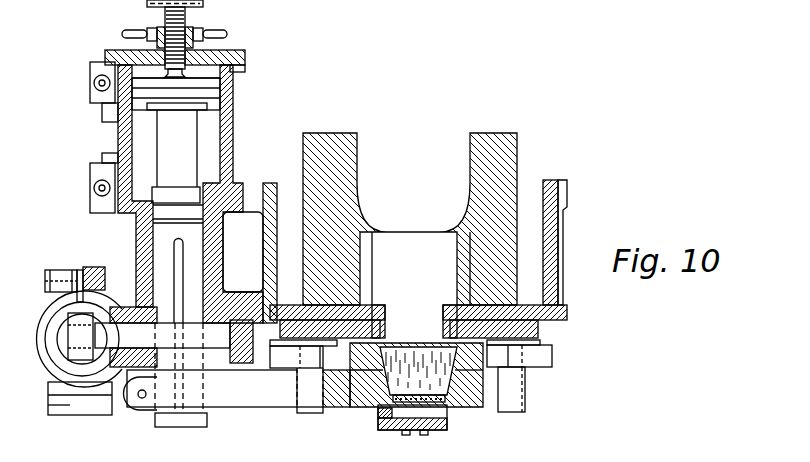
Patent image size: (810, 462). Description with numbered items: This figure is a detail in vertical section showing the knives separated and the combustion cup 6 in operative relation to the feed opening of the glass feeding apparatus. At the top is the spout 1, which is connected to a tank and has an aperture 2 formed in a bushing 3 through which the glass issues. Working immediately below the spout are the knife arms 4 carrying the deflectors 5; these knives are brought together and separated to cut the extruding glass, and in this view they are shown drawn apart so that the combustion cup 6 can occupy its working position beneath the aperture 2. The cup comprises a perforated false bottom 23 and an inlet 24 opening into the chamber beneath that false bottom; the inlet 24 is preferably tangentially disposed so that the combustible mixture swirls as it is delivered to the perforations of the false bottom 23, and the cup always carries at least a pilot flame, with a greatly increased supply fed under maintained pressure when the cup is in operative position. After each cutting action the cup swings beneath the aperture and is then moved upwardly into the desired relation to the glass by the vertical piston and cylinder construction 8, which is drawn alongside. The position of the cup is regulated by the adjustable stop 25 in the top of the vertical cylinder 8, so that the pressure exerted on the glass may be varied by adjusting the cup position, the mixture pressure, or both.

The spout 1 is at (497, 177).
The aperture 2 is at (535, 305).
The bushing 3 is at (538, 328).
The knife arms 4 is at (553, 352).
The deflectors 5 is at (523, 393).
The combustion cup 6 is at (472, 357).
The vertical piston and cylinder construction 8 is at (116, 133).
The perforated false bottom 23 is at (418, 405).
The inlet 24 is at (378, 413).
The adjustable stop 25 is at (193, 43).